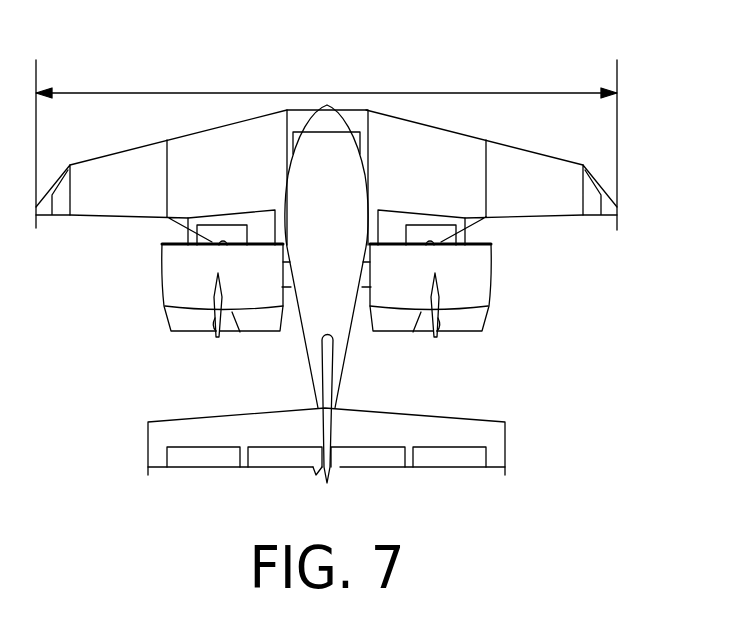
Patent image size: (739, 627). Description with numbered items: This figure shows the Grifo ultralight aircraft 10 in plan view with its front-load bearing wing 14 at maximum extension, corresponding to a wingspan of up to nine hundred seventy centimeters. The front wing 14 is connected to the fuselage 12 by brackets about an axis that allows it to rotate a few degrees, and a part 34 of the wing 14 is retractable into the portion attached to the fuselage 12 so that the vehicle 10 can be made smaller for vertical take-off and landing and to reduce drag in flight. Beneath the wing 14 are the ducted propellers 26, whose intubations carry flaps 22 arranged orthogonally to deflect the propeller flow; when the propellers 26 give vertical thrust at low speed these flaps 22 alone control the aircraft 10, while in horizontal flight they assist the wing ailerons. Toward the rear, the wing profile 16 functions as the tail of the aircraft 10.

The ultralight aircraft 10 is at (547, 61).
The fuselage 12 is at (313, 217).
The front-load bearing wing 14 is at (80, 209).
The wing profile 16 is at (160, 435).
The flaps 22 is at (160, 222).
The ducted propellers 26 is at (187, 323).
The retractable wing part 34 is at (105, 218).